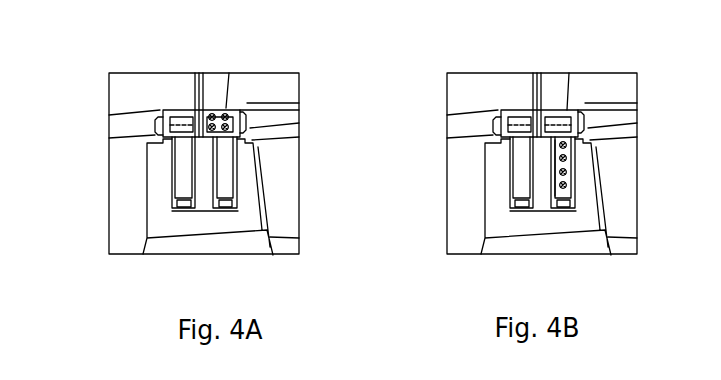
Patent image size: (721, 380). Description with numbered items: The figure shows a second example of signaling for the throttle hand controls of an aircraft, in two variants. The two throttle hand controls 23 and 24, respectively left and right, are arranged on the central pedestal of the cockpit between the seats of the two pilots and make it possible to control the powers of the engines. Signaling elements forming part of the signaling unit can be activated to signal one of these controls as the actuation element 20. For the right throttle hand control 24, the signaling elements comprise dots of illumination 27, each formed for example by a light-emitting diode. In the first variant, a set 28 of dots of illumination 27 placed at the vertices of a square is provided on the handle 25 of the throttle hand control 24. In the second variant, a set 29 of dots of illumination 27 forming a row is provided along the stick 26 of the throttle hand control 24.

In FIG. 4A, the actuation element 20 is at (254, 106).
In FIG. 4A, the left throttle hand control 23 is at (183, 168).
In FIG. 4B, the left throttle hand control 23 is at (518, 177).
In FIG. 4A, the right throttle hand control 24 is at (227, 183).
In FIG. 4B, the right throttle hand control 24 is at (567, 195).
In FIG. 4A, the handle 25 is at (242, 104).
In FIG. 4B, the stick 26 is at (577, 148).
In FIG. 4A, the dots of illumination 27 is at (222, 108).
In FIG. 4B, the dots of illumination 27 is at (570, 183).
In FIG. 4A, the set of dots of illumination 28 is at (252, 119).
In FIG. 4B, the set of dots of illumination 29 is at (545, 162).